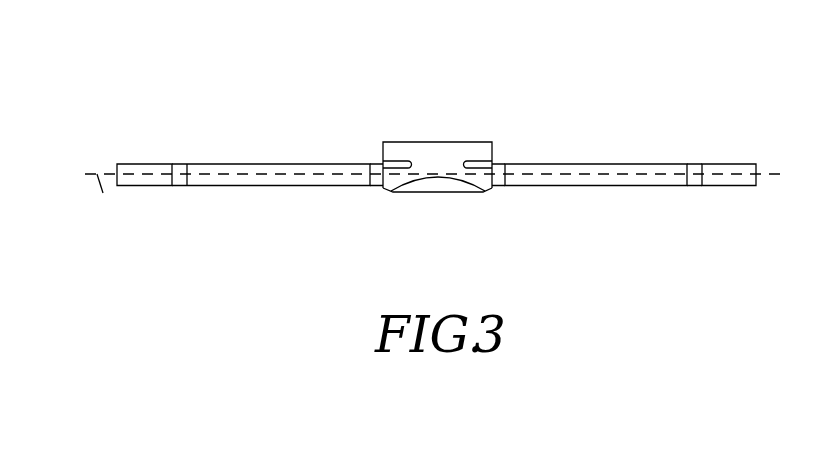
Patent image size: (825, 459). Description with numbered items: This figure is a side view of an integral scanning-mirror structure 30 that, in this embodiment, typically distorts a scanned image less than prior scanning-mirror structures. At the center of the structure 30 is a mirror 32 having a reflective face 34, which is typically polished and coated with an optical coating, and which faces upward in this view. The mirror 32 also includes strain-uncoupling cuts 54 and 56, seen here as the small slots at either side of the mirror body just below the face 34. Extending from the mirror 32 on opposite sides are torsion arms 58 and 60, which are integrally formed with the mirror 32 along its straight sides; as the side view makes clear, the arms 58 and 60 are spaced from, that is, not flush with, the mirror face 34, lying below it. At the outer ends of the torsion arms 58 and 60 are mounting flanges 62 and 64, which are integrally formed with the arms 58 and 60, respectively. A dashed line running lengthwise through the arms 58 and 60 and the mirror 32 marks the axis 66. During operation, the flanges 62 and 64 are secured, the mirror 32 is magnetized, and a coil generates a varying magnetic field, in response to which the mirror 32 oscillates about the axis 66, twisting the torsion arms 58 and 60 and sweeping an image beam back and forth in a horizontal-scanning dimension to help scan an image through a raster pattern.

The scanning-mirror structure 30 is at (148, 88).
The mirror 32 is at (442, 167).
The reflective face 34 is at (438, 142).
The strain-uncoupling cut 54 is at (383, 162).
The strain-uncoupling cut 56 is at (492, 162).
The torsion arm 58 is at (273, 164).
The torsion arm 60 is at (600, 164).
The mounting flange 62 is at (152, 164).
The mounting flange 64 is at (723, 164).
The axis 66 is at (102, 176).